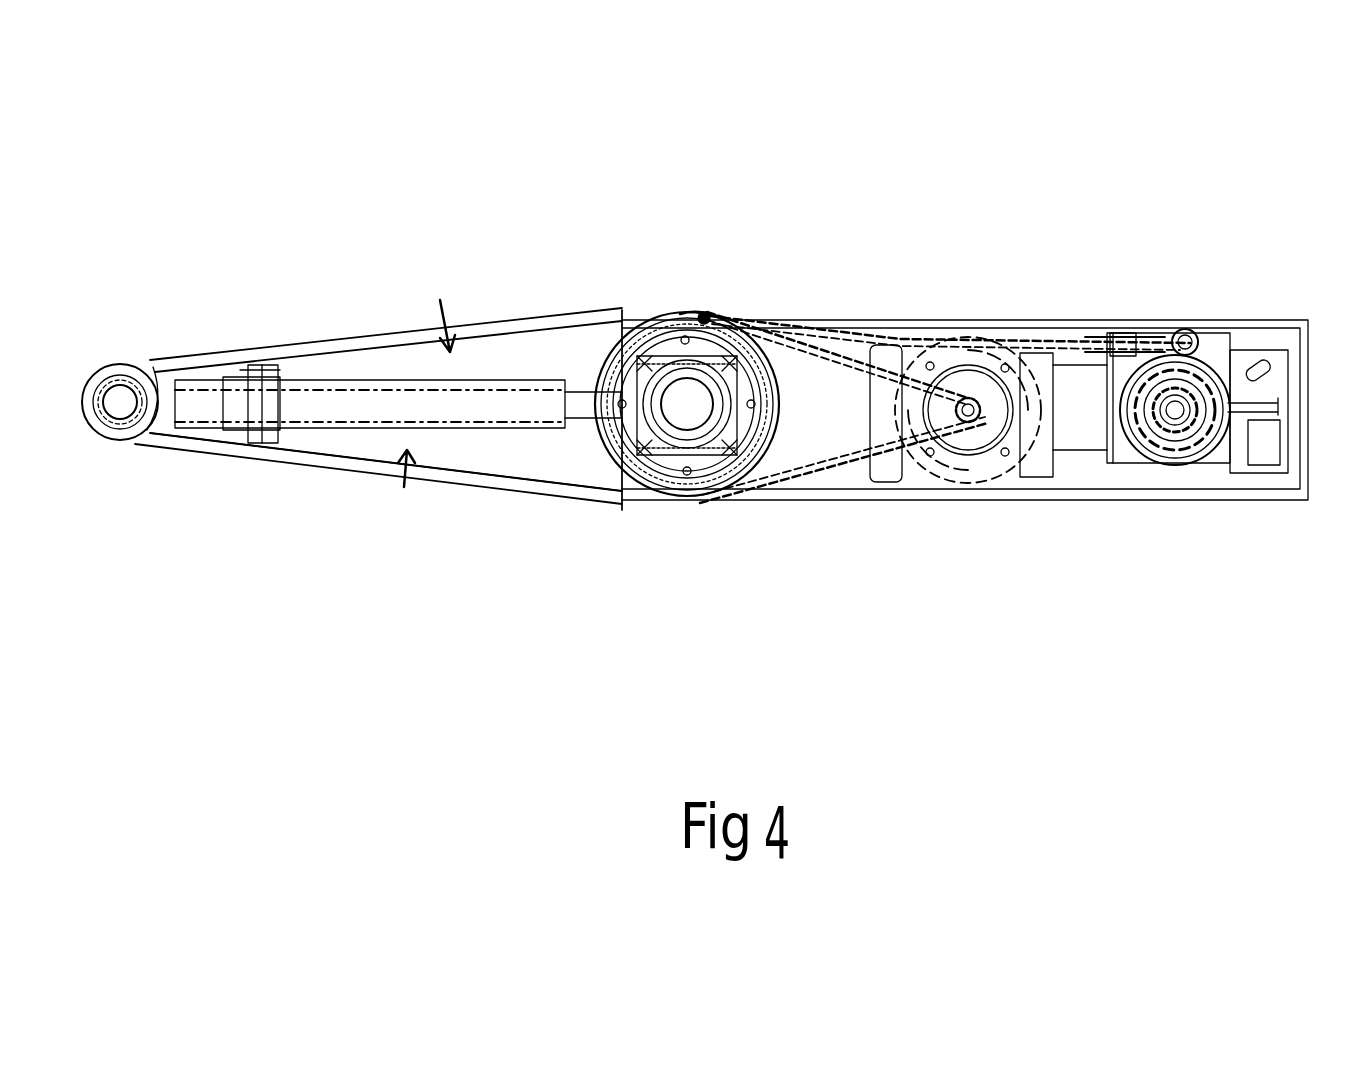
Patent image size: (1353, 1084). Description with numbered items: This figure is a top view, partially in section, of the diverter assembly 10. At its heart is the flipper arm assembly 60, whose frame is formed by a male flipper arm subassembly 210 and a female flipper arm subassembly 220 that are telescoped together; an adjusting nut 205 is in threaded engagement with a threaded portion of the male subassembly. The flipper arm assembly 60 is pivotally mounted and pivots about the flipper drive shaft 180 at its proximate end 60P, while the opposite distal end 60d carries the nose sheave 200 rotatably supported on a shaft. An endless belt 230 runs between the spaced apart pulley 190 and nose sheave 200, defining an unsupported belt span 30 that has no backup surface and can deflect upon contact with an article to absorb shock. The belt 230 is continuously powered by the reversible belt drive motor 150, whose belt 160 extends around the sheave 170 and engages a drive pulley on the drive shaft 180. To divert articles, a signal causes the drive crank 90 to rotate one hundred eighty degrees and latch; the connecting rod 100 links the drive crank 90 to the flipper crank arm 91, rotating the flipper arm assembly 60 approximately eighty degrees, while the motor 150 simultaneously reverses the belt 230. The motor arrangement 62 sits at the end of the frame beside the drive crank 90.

The diverter assembly 10 is at (952, 148).
The unsupported belt span 30 is at (613, 305).
The flipper arm assembly 60 is at (372, 616).
The distal end of arm 60d is at (157, 298).
The proximate end 60P is at (715, 266).
The motor 62 is at (1181, 480).
The drive crank 90 is at (1198, 335).
The flipper crank arm 91 is at (708, 312).
The connecting rod 100 is at (1097, 337).
The belt drive motor 150 is at (992, 345).
The belt 160 is at (835, 475).
The sheave 170 is at (985, 425).
The flipper drive shaft 180 is at (687, 420).
The pulley 190 is at (625, 492).
The nose sheave 200 is at (160, 392).
The adjusting nut 205 is at (275, 376).
The male flipper arm subassembly 210 is at (180, 405).
The female flipper arm subassembly 220 is at (500, 405).
The endless belt 230 is at (264, 447).